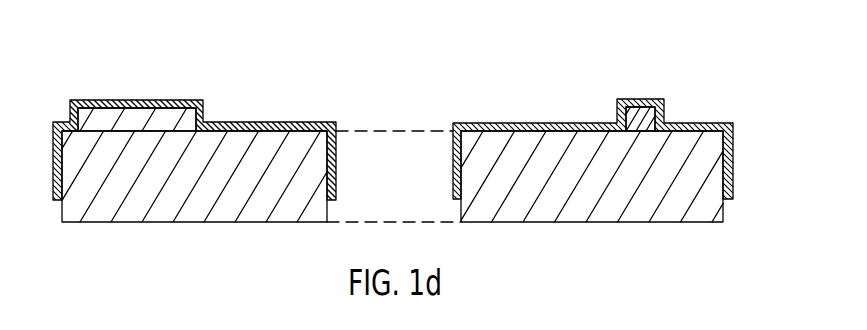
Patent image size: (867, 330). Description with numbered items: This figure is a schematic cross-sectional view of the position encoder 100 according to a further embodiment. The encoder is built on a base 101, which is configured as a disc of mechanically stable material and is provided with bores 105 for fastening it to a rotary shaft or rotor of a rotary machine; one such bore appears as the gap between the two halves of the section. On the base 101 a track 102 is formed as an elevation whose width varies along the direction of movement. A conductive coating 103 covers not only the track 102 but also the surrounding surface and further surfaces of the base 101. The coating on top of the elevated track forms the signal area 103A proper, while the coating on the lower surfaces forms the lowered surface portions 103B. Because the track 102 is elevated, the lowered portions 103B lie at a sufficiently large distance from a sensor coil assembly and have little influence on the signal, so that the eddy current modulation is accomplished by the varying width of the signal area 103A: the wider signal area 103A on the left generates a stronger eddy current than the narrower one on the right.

The position encoder 100 is at (739, 72).
The base 101 is at (722, 216).
The track 102 is at (639, 112).
The coating 103 is at (194, 125).
The signal area 103A is at (108, 100).
The lowered surface portions 103B is at (243, 122).
The bores 105 is at (410, 192).